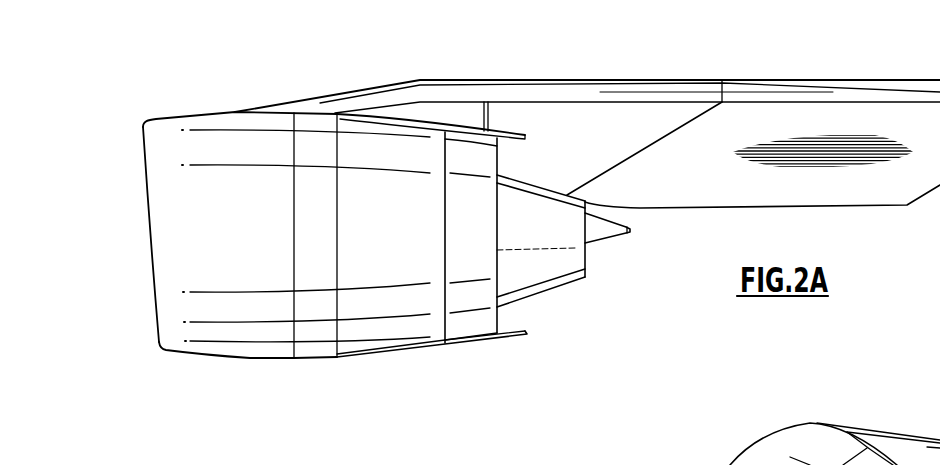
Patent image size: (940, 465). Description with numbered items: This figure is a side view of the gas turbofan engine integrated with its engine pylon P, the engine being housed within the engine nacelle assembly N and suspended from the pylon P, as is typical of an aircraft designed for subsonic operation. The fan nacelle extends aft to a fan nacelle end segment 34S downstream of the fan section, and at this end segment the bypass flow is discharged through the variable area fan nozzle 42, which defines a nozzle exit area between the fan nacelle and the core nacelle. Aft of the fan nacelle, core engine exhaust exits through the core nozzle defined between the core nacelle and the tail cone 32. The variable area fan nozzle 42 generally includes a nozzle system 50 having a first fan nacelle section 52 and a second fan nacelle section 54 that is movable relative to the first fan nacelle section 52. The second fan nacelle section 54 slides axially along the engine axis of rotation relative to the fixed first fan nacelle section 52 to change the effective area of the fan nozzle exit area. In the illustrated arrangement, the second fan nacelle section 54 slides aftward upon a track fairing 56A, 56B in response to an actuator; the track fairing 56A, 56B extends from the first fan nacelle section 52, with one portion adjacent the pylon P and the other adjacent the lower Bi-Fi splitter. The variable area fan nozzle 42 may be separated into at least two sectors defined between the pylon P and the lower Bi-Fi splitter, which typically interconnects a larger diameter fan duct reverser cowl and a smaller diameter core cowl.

The engine nacelle assembly N is at (255, 388).
The engine pylon P is at (797, 116).
The tail cone 32 is at (612, 240).
The fan nacelle end segment 34S is at (498, 309).
The variable area fan nozzle 42 is at (470, 384).
The nozzle system 50 is at (451, 102).
The first fan nacelle section 52 is at (411, 342).
The second fan nacelle section 54 is at (488, 340).
The track fairing 56A is at (499, 131).
The track fairing 56B is at (511, 337).